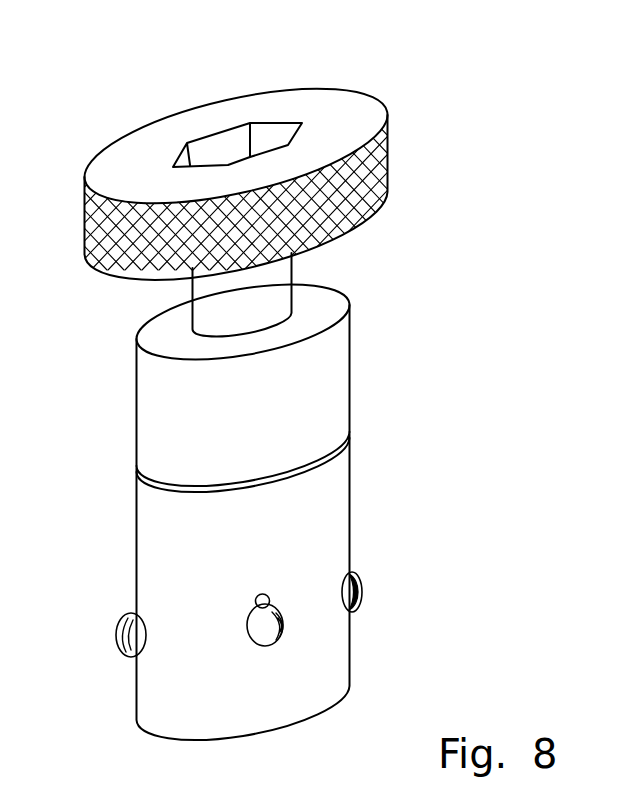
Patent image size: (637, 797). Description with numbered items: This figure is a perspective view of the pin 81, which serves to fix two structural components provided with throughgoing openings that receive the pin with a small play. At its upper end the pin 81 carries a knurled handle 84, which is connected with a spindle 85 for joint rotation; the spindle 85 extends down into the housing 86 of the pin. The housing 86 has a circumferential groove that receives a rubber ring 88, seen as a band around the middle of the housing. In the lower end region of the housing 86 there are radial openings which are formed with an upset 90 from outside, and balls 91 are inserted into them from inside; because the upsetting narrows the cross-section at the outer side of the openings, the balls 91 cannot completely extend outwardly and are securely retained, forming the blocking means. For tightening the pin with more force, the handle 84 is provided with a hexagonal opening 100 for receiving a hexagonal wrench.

The pin 81 is at (277, 375).
The handle 84 is at (274, 145).
The spindle 85 is at (280, 277).
The housing 86 is at (157, 404).
The rubber ring 88 is at (352, 433).
The upset 90 is at (137, 609).
The balls 91 is at (128, 653).
The hexagonal opening 100 is at (232, 145).